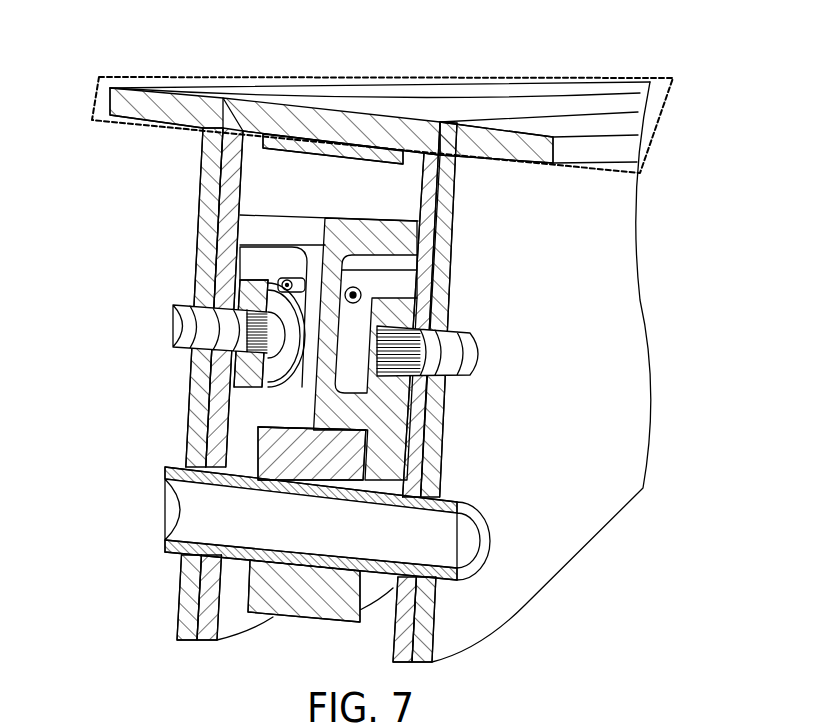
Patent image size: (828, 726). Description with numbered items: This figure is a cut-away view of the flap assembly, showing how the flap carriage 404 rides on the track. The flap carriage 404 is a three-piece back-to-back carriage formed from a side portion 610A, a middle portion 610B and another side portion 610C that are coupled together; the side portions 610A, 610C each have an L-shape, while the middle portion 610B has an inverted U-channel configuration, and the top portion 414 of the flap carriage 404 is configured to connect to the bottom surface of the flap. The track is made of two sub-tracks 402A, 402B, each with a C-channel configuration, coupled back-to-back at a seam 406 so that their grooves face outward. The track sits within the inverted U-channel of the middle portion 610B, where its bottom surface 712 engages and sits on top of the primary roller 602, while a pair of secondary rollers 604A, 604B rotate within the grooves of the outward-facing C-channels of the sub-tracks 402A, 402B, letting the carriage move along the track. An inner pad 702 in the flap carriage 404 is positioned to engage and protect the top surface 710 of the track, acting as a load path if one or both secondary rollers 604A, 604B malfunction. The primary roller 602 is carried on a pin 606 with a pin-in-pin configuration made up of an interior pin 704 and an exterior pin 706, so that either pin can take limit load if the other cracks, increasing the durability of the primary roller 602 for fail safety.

The top portion 414 is at (297, 78).
The side portion 610A is at (185, 92).
The middle portion 610B is at (388, 110).
The side portion 610C is at (561, 136).
The sub-track 402A is at (250, 237).
The sub-track 402B is at (395, 248).
The flap carriage 404 is at (642, 285).
The seam 406 is at (360, 303).
The primary roller 602 is at (258, 450).
The secondary roller 604A is at (257, 298).
The secondary roller 604B is at (393, 392).
The pin 606 is at (498, 543).
The inner pad 702 is at (320, 157).
The interior pin 704 is at (165, 518).
The exterior pin 706 is at (157, 548).
The top surface 710 is at (300, 212).
The bottom surface 712 is at (331, 434).